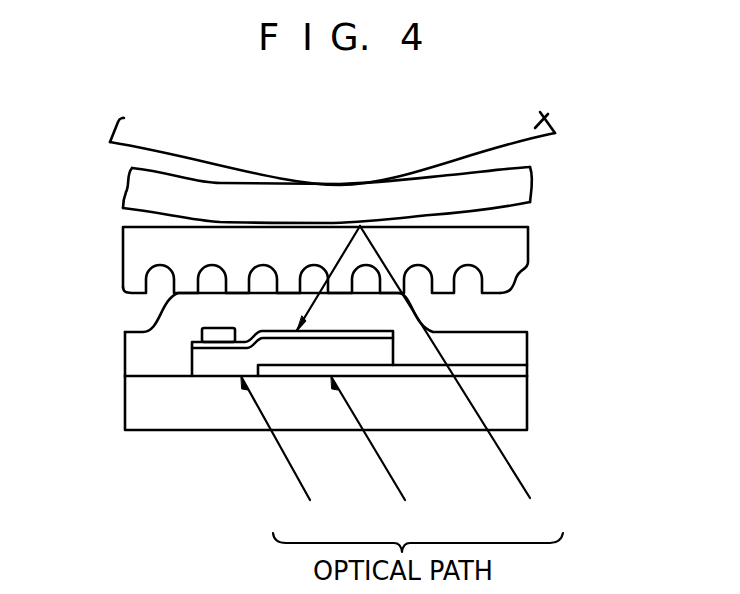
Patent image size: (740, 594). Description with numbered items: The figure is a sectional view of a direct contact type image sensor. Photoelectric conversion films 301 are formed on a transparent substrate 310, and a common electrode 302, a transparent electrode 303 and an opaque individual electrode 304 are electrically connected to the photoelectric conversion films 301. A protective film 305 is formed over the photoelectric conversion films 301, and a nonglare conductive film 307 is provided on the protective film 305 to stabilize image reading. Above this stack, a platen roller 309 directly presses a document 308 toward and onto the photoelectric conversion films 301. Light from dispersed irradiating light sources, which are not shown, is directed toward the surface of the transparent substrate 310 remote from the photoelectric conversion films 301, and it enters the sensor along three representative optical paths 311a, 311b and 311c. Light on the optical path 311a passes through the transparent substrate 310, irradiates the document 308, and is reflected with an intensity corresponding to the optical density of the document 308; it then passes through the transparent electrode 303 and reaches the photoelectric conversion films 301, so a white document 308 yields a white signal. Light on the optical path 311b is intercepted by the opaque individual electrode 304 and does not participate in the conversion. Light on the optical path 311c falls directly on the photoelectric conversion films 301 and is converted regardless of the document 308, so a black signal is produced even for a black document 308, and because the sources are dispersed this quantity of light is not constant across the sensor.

The photoelectric conversion film 301 is at (190, 362).
The common electrode 302 is at (203, 333).
The transparent electrode 303 is at (192, 345).
The opaque individual electrode 304 is at (527, 368).
The protective film 305 is at (515, 343).
The nonglare conductive film 307 is at (530, 245).
The document 308 is at (525, 185).
The platen roller 309 is at (545, 120).
The transparent substrate 310 is at (523, 408).
The optical path 311a is at (454, 383).
The optical path 311b is at (368, 383).
The optical path 311c is at (289, 458).